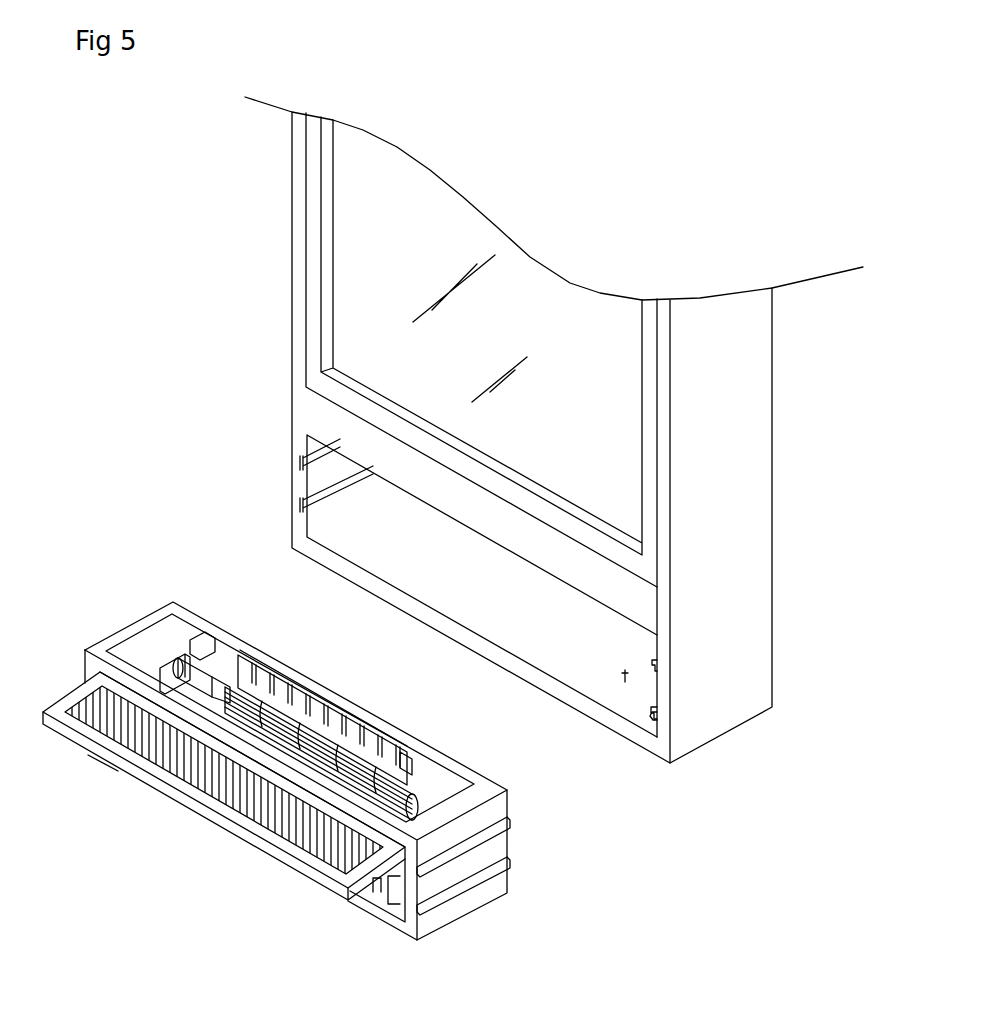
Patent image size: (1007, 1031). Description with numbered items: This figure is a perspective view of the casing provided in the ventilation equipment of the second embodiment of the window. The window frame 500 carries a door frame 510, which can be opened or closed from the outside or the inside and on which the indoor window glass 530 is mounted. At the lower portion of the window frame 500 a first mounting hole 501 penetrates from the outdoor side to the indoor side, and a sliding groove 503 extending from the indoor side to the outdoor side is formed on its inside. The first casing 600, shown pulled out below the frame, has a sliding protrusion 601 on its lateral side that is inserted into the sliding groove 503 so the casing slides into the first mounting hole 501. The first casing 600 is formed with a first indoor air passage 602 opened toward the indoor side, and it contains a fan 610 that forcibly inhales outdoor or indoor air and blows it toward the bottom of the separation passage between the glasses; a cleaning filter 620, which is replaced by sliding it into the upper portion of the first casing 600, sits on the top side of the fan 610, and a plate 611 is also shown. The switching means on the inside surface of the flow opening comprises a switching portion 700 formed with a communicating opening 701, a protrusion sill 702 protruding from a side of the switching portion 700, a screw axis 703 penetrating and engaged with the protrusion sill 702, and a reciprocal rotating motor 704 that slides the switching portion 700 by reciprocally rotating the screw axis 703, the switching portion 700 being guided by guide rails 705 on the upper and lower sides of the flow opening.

The window frame 500 is at (745, 428).
The first mounting hole 501 is at (625, 678).
The sliding groove 503 is at (657, 717).
The door frame 510 is at (648, 360).
The indoor window glass 530 is at (347, 247).
The first casing 600 is at (495, 888).
The sliding protrusion 601 is at (430, 910).
The first indoor air passage 602 is at (383, 887).
The fan 610 is at (305, 740).
The support plate 611 is at (173, 680).
The cleaning filter 620 is at (75, 697).
The switching portion 700 is at (402, 783).
The communicating opening 701 is at (333, 740).
The protrusion sill 702 is at (216, 672).
The screw axis 703 is at (240, 690).
The reciprocal rotating motor 704 is at (196, 662).
The guide rail 705 is at (402, 758).